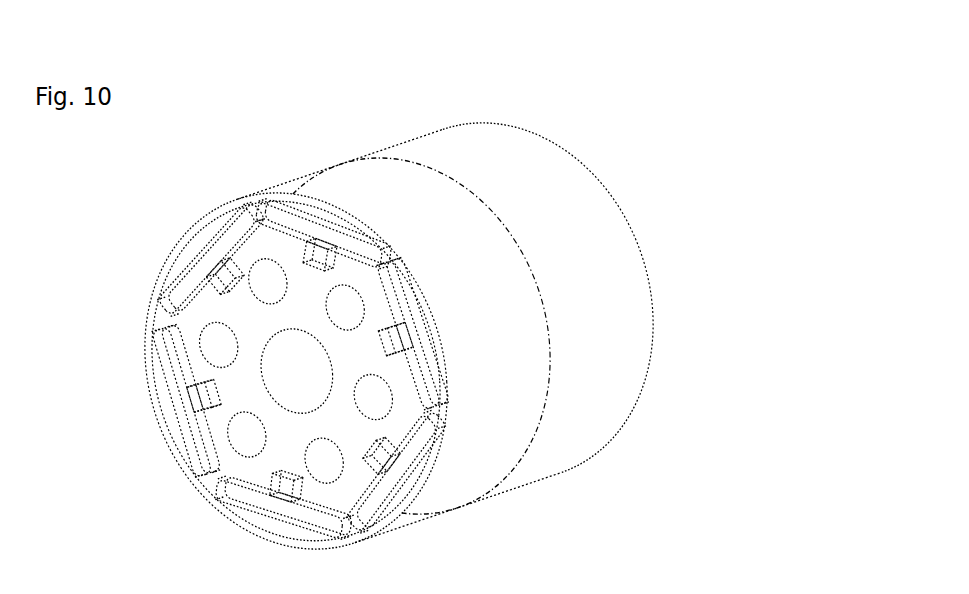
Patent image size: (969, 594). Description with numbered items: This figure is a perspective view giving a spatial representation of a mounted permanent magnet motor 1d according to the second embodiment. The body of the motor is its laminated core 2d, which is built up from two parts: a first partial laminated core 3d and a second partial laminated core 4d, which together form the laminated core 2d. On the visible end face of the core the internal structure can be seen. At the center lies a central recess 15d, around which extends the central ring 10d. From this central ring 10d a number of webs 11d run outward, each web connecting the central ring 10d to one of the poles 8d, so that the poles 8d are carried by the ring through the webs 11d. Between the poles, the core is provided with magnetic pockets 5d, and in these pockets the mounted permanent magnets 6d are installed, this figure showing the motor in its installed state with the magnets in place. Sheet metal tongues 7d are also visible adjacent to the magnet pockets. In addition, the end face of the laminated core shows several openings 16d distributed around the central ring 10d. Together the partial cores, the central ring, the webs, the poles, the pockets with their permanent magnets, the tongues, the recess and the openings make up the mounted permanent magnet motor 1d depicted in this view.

The permanent magnet motor 1d is at (732, 108).
The laminated core 2d is at (588, 158).
The first partial laminated core 3d is at (333, 188).
The second partial laminated core 4d is at (464, 150).
The magnetic pockets 5d is at (157, 363).
The permanent magnets 6d is at (195, 262).
The sheet metal tongues 7d is at (217, 395).
The poles 8d is at (400, 503).
The central ring 10d is at (345, 382).
The webs 11d is at (248, 215).
The central recess 15d is at (288, 385).
The openings 16d is at (348, 298).